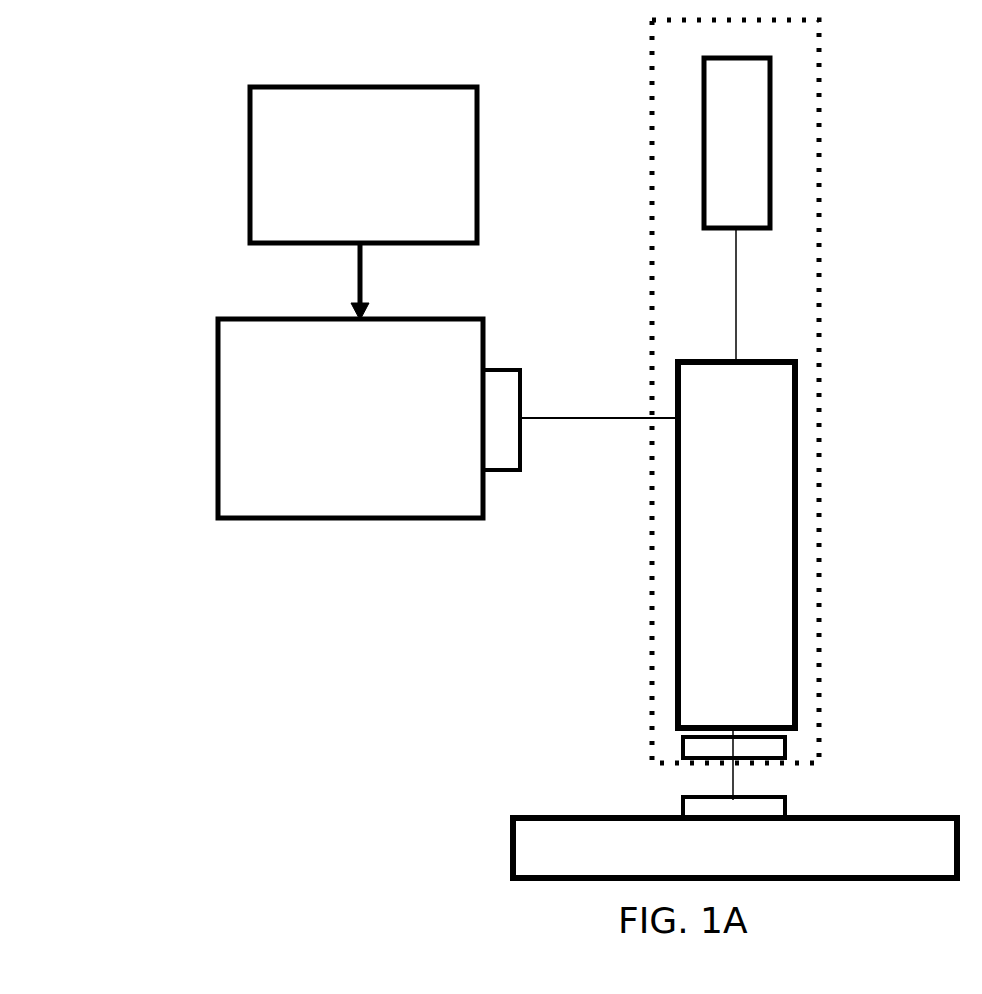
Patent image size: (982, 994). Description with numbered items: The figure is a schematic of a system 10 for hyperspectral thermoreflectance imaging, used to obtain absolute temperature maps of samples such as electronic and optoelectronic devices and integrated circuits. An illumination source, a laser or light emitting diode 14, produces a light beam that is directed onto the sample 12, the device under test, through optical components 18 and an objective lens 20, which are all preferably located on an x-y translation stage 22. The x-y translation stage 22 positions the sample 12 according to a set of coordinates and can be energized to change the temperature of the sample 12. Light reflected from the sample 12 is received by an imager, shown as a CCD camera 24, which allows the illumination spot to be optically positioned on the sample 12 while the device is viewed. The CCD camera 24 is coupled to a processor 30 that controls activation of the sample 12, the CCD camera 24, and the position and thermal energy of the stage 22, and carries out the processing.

The system 10 is at (165, 92).
The sample 12 is at (683, 805).
The laser or light emitting diode 14 is at (704, 118).
The optical components 18 is at (678, 685).
The objective lens 20 is at (683, 748).
The x-y translation stage 22 is at (805, 818).
The CCD camera 24 is at (218, 398).
The processor 30 is at (250, 172).